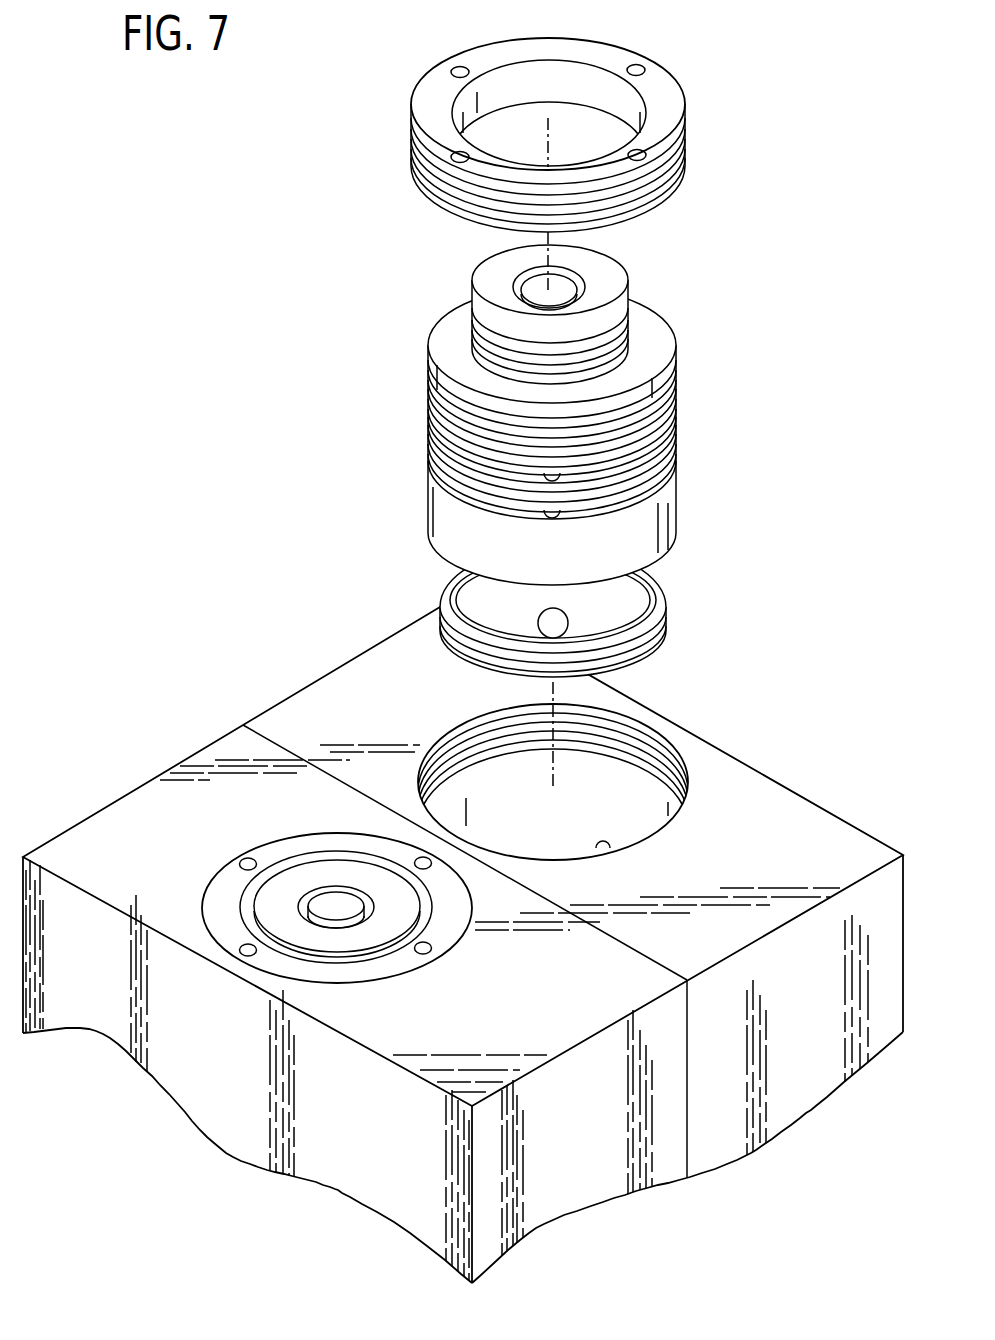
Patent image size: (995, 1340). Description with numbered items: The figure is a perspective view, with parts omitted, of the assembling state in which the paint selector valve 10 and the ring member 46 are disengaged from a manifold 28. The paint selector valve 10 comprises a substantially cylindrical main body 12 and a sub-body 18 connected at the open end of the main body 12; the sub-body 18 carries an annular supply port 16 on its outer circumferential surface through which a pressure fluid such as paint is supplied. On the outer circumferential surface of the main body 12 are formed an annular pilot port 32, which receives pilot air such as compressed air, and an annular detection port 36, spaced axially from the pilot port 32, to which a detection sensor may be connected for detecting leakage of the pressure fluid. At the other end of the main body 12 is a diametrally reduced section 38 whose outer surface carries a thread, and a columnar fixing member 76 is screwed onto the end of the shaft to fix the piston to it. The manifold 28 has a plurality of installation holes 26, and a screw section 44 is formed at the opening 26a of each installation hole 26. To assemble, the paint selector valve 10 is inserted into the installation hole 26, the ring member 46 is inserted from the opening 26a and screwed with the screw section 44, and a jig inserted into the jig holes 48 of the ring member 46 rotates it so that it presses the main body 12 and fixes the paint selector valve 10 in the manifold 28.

The paint selector valve 10 is at (284, 251).
The main body 12 is at (450, 590).
The supply port 16 is at (551, 627).
The sub-body 18 is at (591, 628).
The installation hole 26 is at (541, 822).
The opening 26a is at (465, 724).
The manifold 28 is at (768, 795).
The pilot port 32 is at (550, 480).
The detection port 36 is at (558, 514).
The diametrally reduced section 38 is at (558, 303).
The screw section 44 is at (553, 813).
The ring member 46 is at (603, 53).
The jig holes 48 is at (452, 72).
The fixing member 76 is at (532, 291).